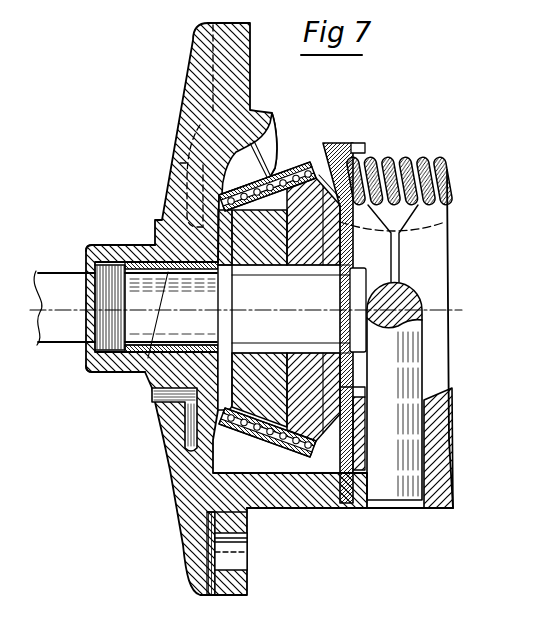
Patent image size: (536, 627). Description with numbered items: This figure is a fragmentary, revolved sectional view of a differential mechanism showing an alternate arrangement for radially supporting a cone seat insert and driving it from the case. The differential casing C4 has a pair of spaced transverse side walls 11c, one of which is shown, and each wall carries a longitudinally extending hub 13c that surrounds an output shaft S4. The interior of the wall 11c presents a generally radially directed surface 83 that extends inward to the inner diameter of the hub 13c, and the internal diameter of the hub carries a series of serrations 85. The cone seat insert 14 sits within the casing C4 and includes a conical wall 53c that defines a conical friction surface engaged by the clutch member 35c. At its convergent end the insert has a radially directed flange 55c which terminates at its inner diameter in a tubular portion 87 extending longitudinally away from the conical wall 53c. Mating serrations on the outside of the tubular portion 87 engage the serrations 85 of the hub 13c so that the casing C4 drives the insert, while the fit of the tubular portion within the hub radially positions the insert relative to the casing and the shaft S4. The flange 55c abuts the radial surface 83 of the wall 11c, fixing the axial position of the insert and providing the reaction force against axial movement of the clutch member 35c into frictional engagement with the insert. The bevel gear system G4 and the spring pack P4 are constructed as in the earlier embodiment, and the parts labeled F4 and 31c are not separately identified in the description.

The differential casing C4 is at (192, 61).
The transverse side wall 11c is at (193, 133).
The hub 13c is at (110, 245).
The tubular portion 87 is at (88, 272).
The output shaft S4 is at (42, 344).
The serrations 85 is at (138, 357).
The cone seat insert 14 is at (148, 358).
The radially directed flange 55c is at (182, 410).
The clutch member 35c is at (215, 415).
The conical wall 53c is at (207, 462).
The radially directed surface 83 is at (262, 143).
The bearing F4 is at (291, 168).
The spring pack P4 is at (401, 153).
The bevel gear system G4 is at (323, 473).
The pin 31c is at (386, 488).